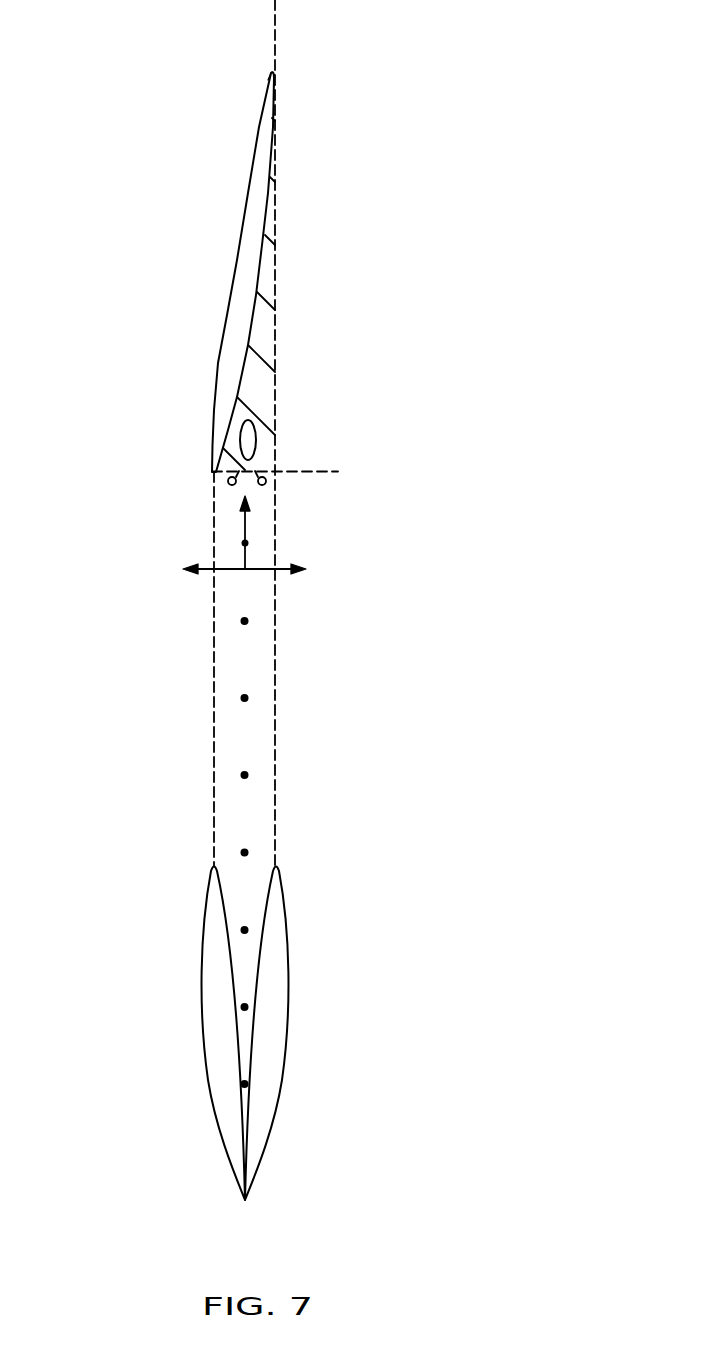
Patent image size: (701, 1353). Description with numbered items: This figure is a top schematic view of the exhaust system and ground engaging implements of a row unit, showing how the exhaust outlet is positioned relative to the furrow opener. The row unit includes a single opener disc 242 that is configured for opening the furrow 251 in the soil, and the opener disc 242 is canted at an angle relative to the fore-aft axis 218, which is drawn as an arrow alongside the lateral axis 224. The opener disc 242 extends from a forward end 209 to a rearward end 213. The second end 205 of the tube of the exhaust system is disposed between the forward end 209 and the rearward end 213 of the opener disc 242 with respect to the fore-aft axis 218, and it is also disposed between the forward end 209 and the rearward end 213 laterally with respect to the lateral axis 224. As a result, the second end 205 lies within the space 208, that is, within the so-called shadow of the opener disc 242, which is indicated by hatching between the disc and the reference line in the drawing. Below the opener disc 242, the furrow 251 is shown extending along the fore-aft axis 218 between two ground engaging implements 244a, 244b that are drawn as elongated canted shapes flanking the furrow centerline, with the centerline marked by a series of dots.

The forward end 209 is at (273, 72).
The opener disc 242 is at (240, 268).
The space 208 is at (263, 337).
The second end 205 is at (256, 434).
The rearward end 213 is at (211, 473).
The furrow 251 is at (263, 513).
The fore-aft axis 218 is at (245, 537).
The lateral axis 224 is at (260, 569).
The first blade 244a is at (210, 1003).
The second blade 244b is at (280, 1003).